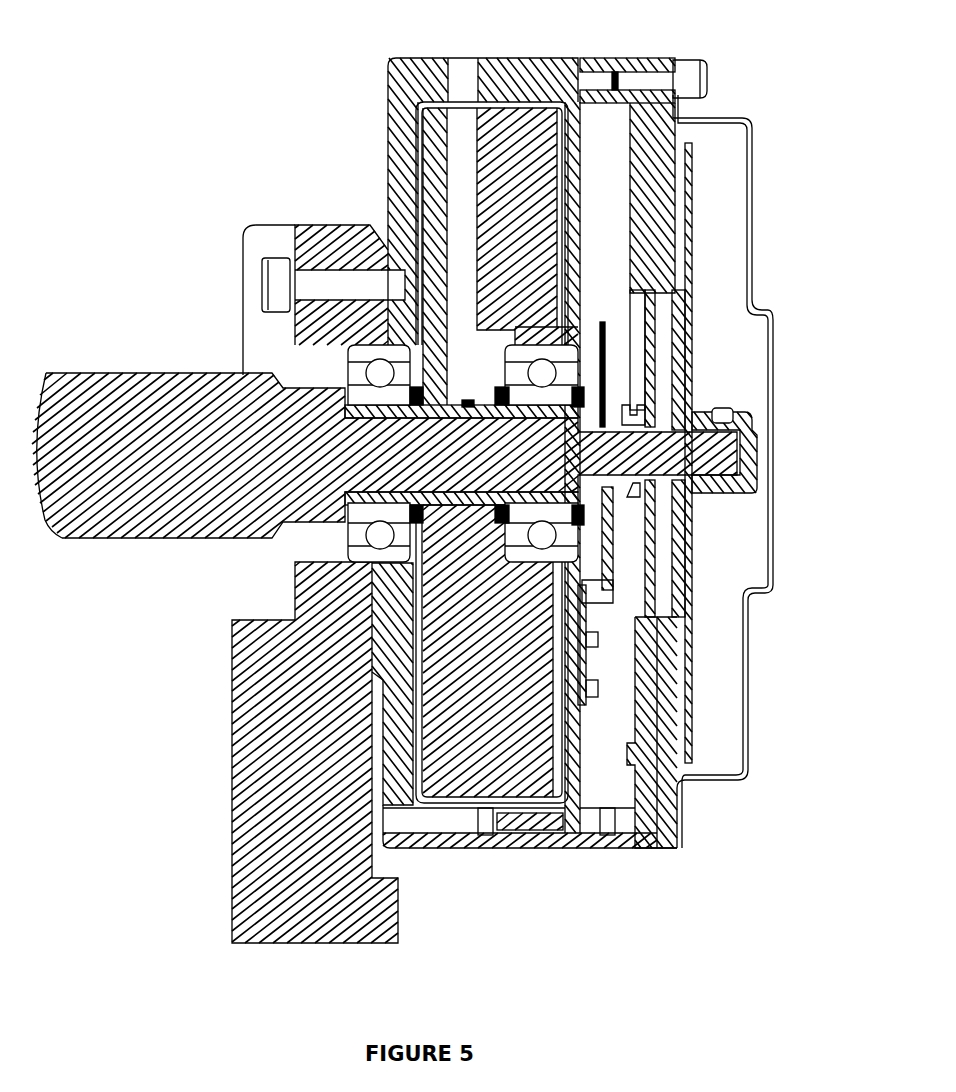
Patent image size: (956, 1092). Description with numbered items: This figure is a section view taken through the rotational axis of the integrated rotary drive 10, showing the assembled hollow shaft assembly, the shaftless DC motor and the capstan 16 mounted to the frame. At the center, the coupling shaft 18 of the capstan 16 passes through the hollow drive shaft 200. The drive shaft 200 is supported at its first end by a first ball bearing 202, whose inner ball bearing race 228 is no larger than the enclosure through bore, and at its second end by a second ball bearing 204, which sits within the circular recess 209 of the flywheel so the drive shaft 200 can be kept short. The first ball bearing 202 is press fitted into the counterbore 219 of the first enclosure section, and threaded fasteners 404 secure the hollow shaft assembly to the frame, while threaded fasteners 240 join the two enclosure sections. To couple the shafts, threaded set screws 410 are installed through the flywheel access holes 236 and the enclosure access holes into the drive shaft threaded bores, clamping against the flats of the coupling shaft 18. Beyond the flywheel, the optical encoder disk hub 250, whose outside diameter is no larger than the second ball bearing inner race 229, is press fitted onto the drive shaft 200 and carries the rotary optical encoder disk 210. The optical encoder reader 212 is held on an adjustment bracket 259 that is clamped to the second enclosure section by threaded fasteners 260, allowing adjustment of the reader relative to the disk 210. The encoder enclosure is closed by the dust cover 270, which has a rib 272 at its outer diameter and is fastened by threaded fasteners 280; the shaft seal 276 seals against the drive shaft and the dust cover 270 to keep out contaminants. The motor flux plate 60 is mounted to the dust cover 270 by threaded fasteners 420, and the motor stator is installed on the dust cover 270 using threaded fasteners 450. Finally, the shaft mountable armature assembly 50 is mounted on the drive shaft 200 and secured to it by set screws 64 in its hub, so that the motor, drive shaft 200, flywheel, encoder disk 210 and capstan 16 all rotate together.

The integrated rotary drive 10 is at (330, 110).
The capstan 16 is at (100, 535).
The coupling shaft 18 is at (712, 463).
The shaft mountable armature assembly 50 is at (693, 352).
The motor flux plate 60 is at (758, 280).
The set screws 64 is at (723, 420).
The drive shaft 200 is at (350, 533).
The first ball bearing 202 is at (360, 365).
The second ball bearing 204 is at (570, 360).
The circular recess 209 is at (493, 330).
The rotary optical encoder disk 210 is at (600, 565).
The optical encoder reader 212 is at (593, 600).
The counterbore 219 is at (470, 75).
The inner ball bearing race 228 is at (362, 393).
The second ball bearing inner race 229 is at (555, 552).
The access holes 236 is at (467, 408).
The threaded fasteners 240 is at (502, 823).
The optical encoder disk hub 250 is at (600, 372).
The adjustment bracket 259 is at (593, 680).
The threaded fasteners 260 is at (593, 640).
The dust cover 270 is at (650, 850).
The rib 272 is at (630, 68).
The shaft seal 276 is at (640, 497).
The threaded fasteners 280 is at (607, 830).
The threaded fasteners 404 is at (278, 265).
The threaded set screws 410 is at (463, 263).
The threaded fasteners 420 is at (677, 795).
The threaded fasteners 450 is at (695, 78).